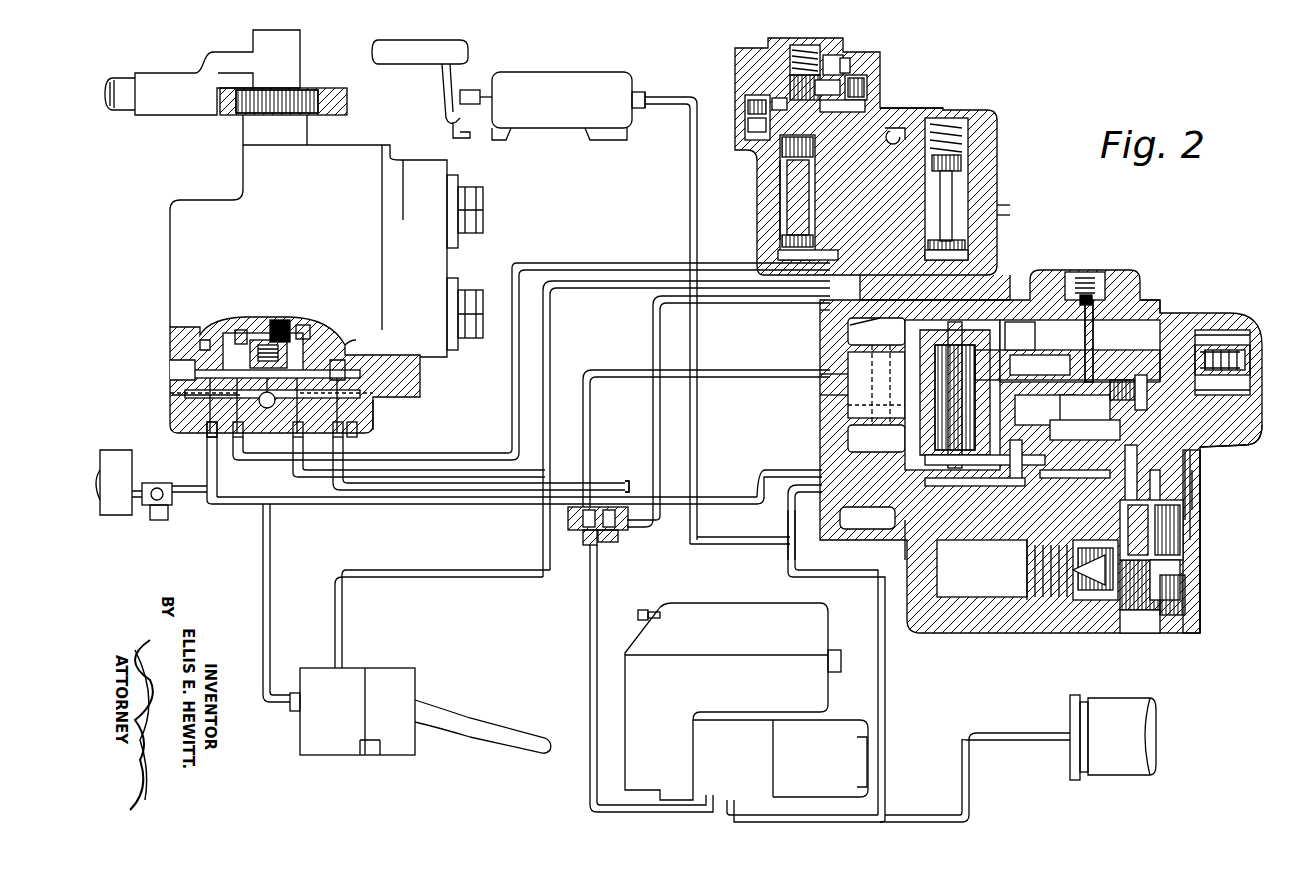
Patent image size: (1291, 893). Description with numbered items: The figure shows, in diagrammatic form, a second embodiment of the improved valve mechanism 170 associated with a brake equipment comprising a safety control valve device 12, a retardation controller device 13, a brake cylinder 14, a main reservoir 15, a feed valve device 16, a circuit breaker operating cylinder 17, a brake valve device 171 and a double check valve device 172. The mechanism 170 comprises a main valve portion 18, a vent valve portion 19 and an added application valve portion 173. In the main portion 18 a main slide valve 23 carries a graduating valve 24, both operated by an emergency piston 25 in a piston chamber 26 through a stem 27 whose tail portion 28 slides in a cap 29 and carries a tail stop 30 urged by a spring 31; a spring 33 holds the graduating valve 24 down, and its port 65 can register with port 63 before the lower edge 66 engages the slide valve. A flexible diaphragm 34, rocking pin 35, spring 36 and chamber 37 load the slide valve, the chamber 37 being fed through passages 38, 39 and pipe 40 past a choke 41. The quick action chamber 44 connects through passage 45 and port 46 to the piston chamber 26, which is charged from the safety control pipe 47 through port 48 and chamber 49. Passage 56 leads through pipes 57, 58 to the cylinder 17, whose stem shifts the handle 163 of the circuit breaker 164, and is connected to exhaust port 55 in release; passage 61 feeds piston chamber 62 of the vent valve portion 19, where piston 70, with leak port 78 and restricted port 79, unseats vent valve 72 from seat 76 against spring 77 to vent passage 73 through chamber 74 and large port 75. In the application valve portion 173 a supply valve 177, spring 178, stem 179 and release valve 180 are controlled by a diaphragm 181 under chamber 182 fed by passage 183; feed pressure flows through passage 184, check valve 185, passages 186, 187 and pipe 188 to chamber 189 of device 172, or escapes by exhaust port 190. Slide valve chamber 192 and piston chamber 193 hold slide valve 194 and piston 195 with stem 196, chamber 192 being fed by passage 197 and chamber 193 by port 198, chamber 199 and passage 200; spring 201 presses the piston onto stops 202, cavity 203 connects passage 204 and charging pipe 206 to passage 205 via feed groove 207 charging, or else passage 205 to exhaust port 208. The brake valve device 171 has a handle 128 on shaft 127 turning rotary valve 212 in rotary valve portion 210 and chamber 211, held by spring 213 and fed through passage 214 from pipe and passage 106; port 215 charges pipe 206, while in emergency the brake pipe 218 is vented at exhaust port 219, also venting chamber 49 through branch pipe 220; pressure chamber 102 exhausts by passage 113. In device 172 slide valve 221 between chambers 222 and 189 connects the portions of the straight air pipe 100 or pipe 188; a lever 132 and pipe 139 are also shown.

The safety control valve device 12 is at (312, 661).
The retardation controller device 13 is at (767, 597).
The brake cylinder 14 is at (1125, 698).
The main reservoir 15 is at (115, 452).
The feed valve device 16 is at (155, 483).
The circuit breaker operating cylinder 17 is at (545, 72).
The main valve portion 18 is at (1202, 326).
The vent valve portion 19 is at (1212, 516).
The main slide valve 23 is at (1020, 331).
The graduating valve 24 is at (1240, 330).
The emergency piston 25 is at (876, 404).
The piston chamber 26 is at (876, 385).
The stem 27 is at (1020, 360).
The tail portion 28 is at (1220, 361).
The cap 29 is at (1224, 361).
The tail stop 30 is at (1225, 430).
The spring 31 is at (1235, 435).
The spring 33 is at (1142, 375).
The flexible diaphragm 34 is at (1150, 300).
The rocking pin 35 is at (1190, 312).
The spring 36 is at (1094, 300).
The chamber 37 is at (1090, 295).
The passage 38 is at (1055, 272).
The passage 39 is at (985, 463).
The pipe 40 is at (210, 500).
The choke 41 is at (1082, 272).
The quick action chamber 44 is at (848, 335).
The passage 45 is at (995, 330).
The port 46 is at (958, 322).
The safety control pipe 47 is at (551, 303).
The port 48 is at (845, 379).
The chamber 49 is at (830, 400).
The exhaust port 55 is at (1071, 470).
The passage 56 is at (1075, 481).
The pipe 57 is at (786, 518).
The pipe 58 is at (690, 245).
The passage 61 is at (1192, 490).
The piston chamber 62 is at (1183, 552).
The port 63 is at (1140, 400).
The port 65 is at (1130, 380).
The lower edge 66 is at (1195, 445).
The piston 70 is at (1180, 592).
The vent valve 72 is at (1095, 600).
The passage 73 is at (975, 472).
The chamber 74 is at (1230, 615).
The large port 75 is at (1130, 650).
The seat 76 is at (1095, 620).
The spring 77 is at (1030, 633).
The leak port 78 is at (1190, 505).
The restricted port 79 is at (1180, 570).
The straight air pipe 100 is at (380, 492).
The pressure chamber 102 is at (345, 352).
The pipe and passage 106 is at (208, 437).
The exhaust passage 113 is at (375, 412).
The shaft 127 is at (258, 330).
The handle 128 is at (120, 78).
The lever 132 is at (488, 708).
The pipe 139 is at (262, 582).
The handle 163 is at (442, 85).
The circuit breaker 164 is at (372, 48).
The valve mechanism 170 is at (812, 320).
The brake valve device 171 is at (175, 200).
The double check valve device 172 is at (630, 556).
The application valve portion 173 is at (1005, 150).
The supply valve 177 is at (992, 128).
The spring 178 is at (945, 110).
The stem 179 is at (998, 195).
The release valve 180 is at (1005, 225).
The diaphragm 181 is at (968, 245).
The chamber 182 is at (975, 258).
The passage 183 is at (860, 525).
The passage 184 is at (965, 172).
The check valve 185 is at (897, 130).
The passage 186 is at (910, 125).
The passage 187 is at (848, 326).
The pipe 188 is at (655, 318).
The chamber 189 is at (625, 540).
The exhaust port 190 is at (1010, 208).
The slide valve chamber 192 is at (778, 188).
The piston chamber 193 is at (735, 97).
The slide valve 194 is at (780, 240).
The piston 195 is at (772, 100).
The stem 196 is at (790, 168).
The passage 197 is at (868, 85).
The port 198 is at (843, 52).
The chamber 199 is at (790, 80).
The passage 200 is at (880, 60).
The spring 201 is at (768, 43).
The stops 202 is at (746, 130).
The cavity 203 is at (788, 200).
The passage 204 is at (778, 256).
The passage 205 is at (866, 106).
The charging pipe 206 is at (245, 460).
The feed groove 207 is at (746, 112).
The exhaust port 208 is at (840, 85).
The rotary valve portion 210 is at (210, 322).
The chamber 211 is at (310, 325).
The rotary valve 212 is at (340, 345).
The spring 213 is at (278, 325).
The passage 214 is at (205, 355).
The port 215 is at (180, 374).
The brake pipe 218 is at (405, 470).
The exhaust port 219 is at (175, 400).
The branch pipe 220 is at (625, 368).
The slide valve 221 is at (612, 505).
The chamber 222 is at (585, 548).